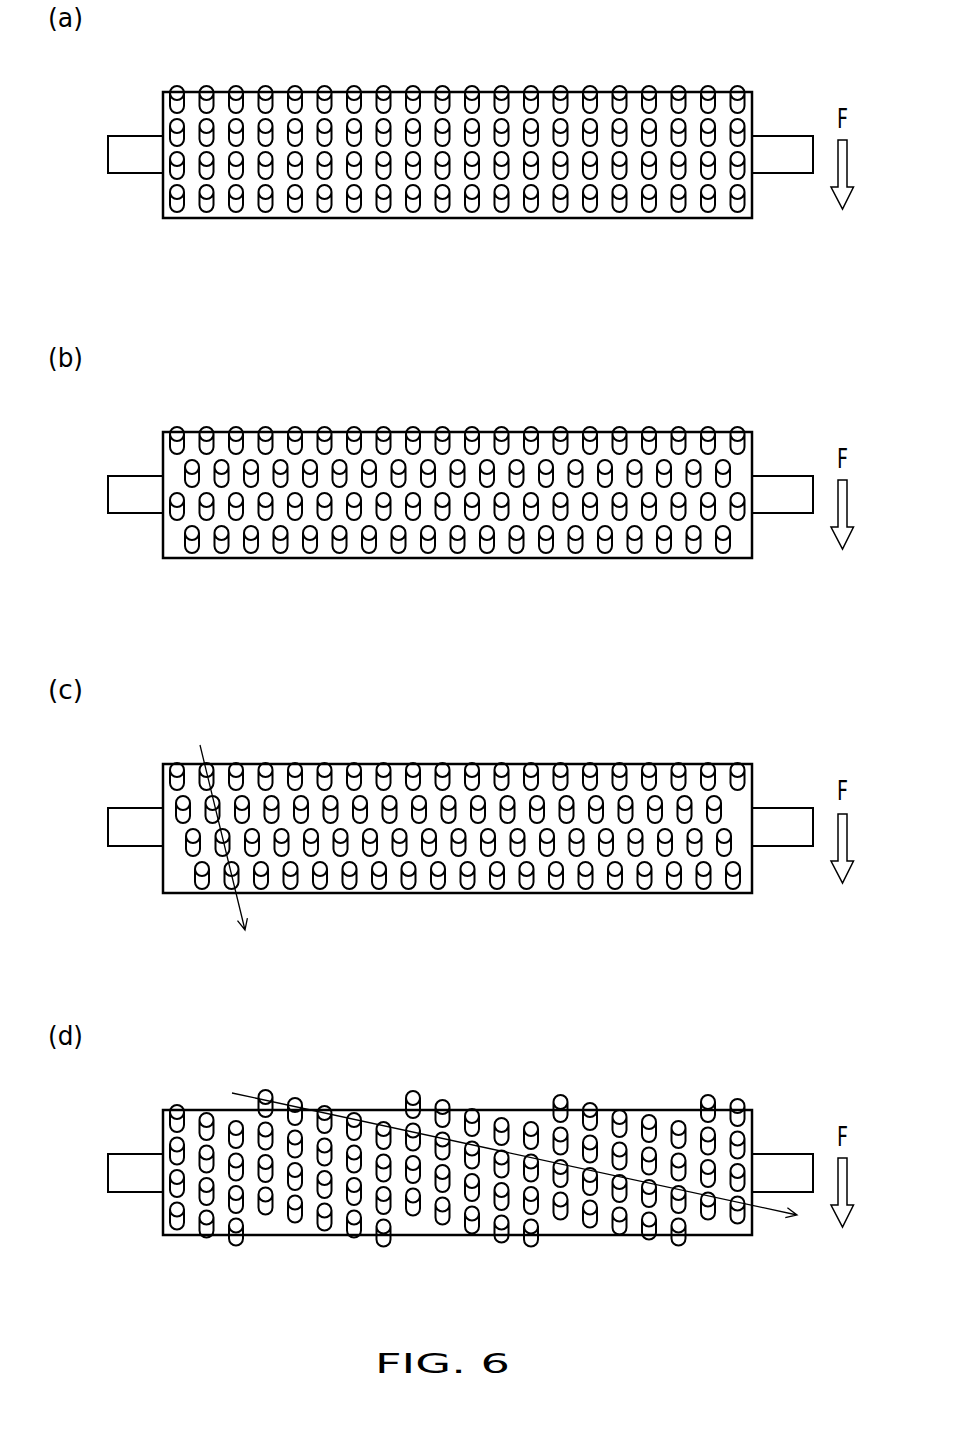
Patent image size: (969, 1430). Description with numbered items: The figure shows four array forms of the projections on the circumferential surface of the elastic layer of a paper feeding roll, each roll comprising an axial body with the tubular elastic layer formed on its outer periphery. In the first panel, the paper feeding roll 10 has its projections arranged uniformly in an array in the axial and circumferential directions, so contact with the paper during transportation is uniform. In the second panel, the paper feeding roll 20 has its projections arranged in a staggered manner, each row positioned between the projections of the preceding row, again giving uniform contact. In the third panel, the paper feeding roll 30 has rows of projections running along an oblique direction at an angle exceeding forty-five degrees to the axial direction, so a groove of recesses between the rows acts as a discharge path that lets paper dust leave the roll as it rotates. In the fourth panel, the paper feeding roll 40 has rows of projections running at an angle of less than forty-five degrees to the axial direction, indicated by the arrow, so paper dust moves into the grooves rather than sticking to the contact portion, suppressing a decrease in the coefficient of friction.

The paper feeding roll 10 is at (462, 157).
The paper feeding roll 20 is at (462, 497).
The paper feeding roll 30 is at (462, 829).
The paper feeding roll 40 is at (462, 1176).